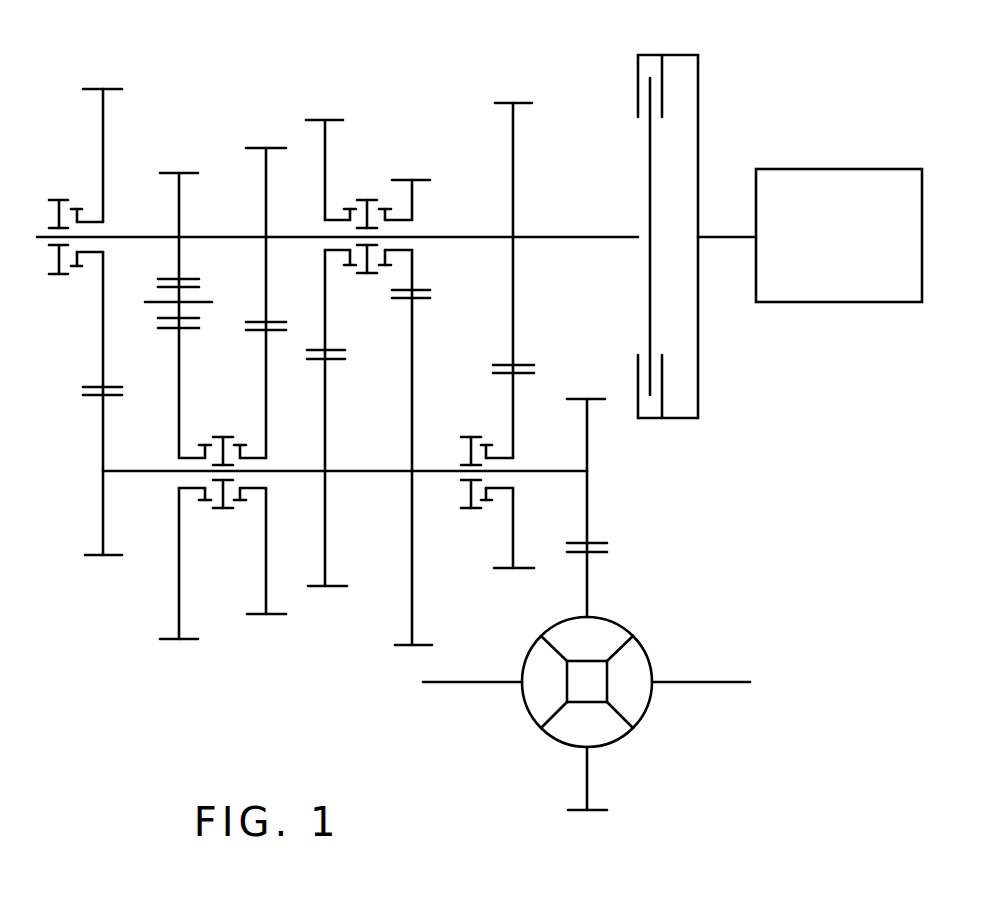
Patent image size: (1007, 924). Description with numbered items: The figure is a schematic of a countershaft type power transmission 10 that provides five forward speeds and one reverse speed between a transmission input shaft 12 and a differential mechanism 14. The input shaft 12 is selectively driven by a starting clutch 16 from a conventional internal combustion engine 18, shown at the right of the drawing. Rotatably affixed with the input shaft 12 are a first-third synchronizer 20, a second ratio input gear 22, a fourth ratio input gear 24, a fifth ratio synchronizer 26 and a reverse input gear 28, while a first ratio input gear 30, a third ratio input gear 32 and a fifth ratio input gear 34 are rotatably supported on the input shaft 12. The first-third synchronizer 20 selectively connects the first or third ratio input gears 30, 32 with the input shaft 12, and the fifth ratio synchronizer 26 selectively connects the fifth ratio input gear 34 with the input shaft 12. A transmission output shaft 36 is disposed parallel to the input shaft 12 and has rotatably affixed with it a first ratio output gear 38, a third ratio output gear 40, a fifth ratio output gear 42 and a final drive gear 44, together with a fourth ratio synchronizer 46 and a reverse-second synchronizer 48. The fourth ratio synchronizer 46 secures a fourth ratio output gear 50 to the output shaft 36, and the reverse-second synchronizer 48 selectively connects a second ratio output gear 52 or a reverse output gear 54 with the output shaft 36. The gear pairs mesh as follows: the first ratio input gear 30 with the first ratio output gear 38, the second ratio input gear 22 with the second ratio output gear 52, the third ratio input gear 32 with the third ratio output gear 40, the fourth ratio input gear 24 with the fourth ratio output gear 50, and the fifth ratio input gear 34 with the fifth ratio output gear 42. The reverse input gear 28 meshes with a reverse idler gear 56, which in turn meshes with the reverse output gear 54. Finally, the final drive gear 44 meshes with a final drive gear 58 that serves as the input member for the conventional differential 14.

The countershaft type power transmission 10 is at (439, 55).
The transmission input shaft 12 is at (580, 238).
The differential mechanism 14 is at (657, 730).
The starting clutch 16 is at (714, 438).
The internal combustion engine 18 is at (811, 189).
The 1-3 synchronizer 20 is at (367, 174).
The second ratio input gear 22 is at (258, 147).
The fourth ratio input gear 24 is at (520, 102).
The fifth ratio synchronizer 26 is at (70, 174).
The reverse input gear 28 is at (183, 170).
The first ratio input gear 30 is at (418, 178).
The third ratio input gear 32 is at (320, 118).
The fifth ratio input gear 34 is at (113, 86).
The transmission output shaft 36 is at (533, 470).
The first ratio output gear 38 is at (404, 648).
The third ratio output gear 40 is at (333, 590).
The fifth ratio output gear 42 is at (100, 558).
The final drive gear 44 is at (588, 497).
The fourth ratio synchronizer 46 is at (474, 413).
The R-2 synchronizer 48 is at (235, 414).
The fourth ratio output gear 50 is at (513, 540).
The second ratio output gear 52 is at (266, 532).
The reverse output gear 54 is at (178, 568).
The reverse idler gear 56 is at (195, 300).
The final drive gear 58 is at (588, 584).